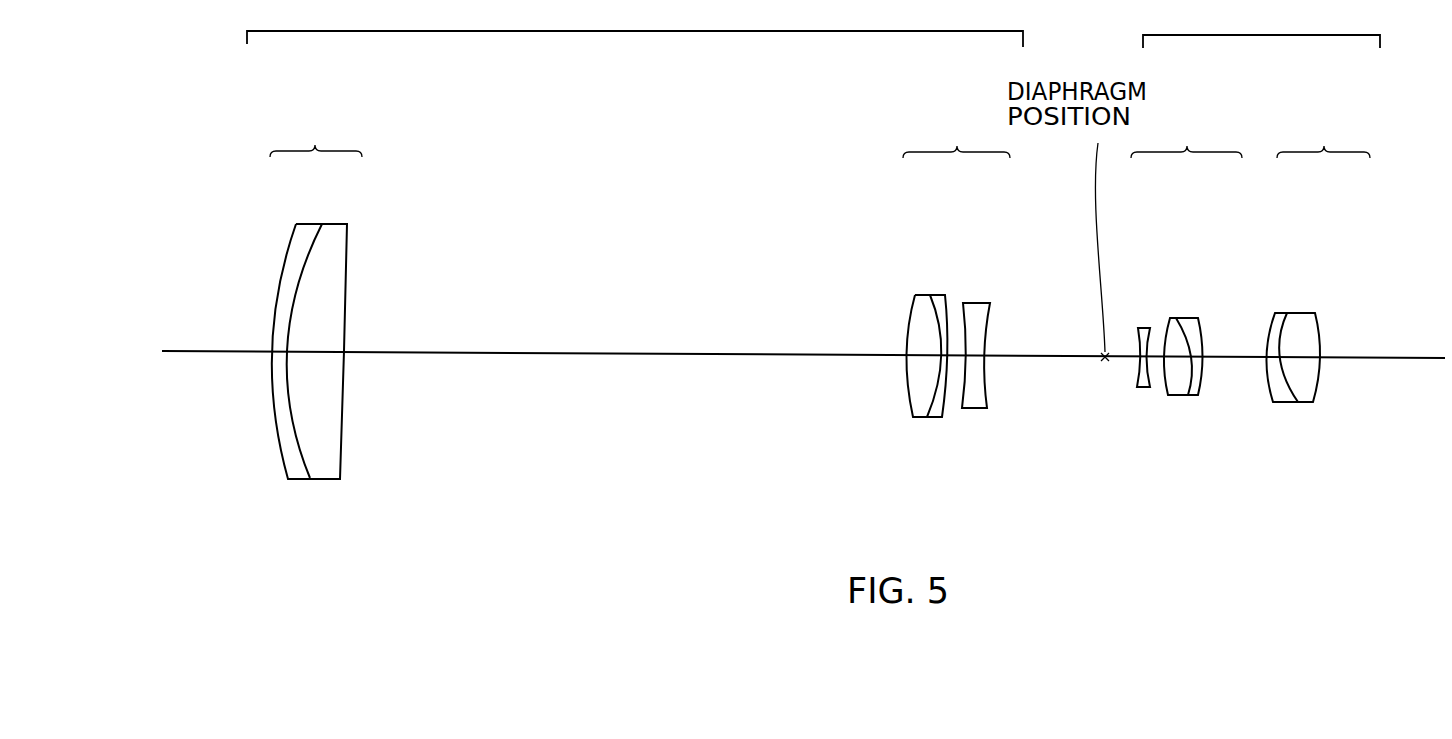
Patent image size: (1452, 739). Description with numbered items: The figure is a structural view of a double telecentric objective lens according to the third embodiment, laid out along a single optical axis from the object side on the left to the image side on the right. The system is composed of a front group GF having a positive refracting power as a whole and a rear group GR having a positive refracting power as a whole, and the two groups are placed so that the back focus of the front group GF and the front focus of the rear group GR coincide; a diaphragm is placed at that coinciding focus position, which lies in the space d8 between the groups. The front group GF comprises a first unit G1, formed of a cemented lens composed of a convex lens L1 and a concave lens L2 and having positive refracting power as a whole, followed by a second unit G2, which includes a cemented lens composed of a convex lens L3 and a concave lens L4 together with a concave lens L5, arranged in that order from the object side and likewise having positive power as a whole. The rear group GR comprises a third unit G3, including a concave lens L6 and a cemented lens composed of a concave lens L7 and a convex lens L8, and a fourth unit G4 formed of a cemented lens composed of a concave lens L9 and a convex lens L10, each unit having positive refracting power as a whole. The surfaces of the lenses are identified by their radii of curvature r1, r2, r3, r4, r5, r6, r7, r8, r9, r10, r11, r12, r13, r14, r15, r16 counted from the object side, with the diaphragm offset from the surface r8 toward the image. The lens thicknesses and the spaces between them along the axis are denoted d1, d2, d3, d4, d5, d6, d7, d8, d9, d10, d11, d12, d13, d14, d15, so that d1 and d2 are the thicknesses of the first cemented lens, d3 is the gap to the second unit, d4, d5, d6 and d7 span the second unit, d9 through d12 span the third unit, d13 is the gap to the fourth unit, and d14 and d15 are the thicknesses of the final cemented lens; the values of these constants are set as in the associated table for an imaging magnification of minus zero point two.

The front group GF is at (635, 24).
The rear group GR is at (1261, 26).
The first unit G1 is at (316, 134).
The second unit G2 is at (956, 137).
The third unit G3 is at (1186, 137).
The fourth unit G4 is at (1323, 137).
The convex lens L1 is at (308, 232).
The concave lens L2 is at (338, 232).
The convex lens L3 is at (924, 300).
The concave lens L4 is at (938, 300).
The concave lens L5 is at (975, 303).
The concave lens L6 is at (1146, 328).
The concave lens L7 is at (1175, 318).
The convex lens L8 is at (1193, 318).
The concave lens L9 is at (1285, 313).
The convex lens L10 is at (1308, 313).
The lens thickness d1 is at (278, 348).
The lens thickness d2 is at (317, 338).
The air space d3 is at (560, 338).
The lens thickness d4 is at (920, 353).
The lens thickness d5 is at (940, 353).
The air space d6 is at (958, 350).
The lens thickness d7 is at (972, 352).
The air space d8 is at (987, 350).
The lens thickness d9 is at (1138, 360).
The air space d10 is at (1160, 358).
The lens thickness d11 is at (1178, 357).
The lens thickness d12 is at (1190, 360).
The air space d13 is at (1280, 355).
The lens thickness d14 is at (1297, 357).
The lens thickness d15 is at (1320, 360).
The radius of curvature r1 is at (287, 467).
The radius of curvature r2 is at (309, 470).
The radius of curvature r3 is at (343, 467).
The radius of curvature r4 is at (912, 403).
The radius of curvature r5 is at (927, 413).
The radius of curvature r6 is at (945, 405).
The radius of curvature r7 is at (958, 403).
The radius of curvature r8 is at (992, 397).
The radius of curvature r9 is at (1138, 377).
The radius of curvature r10 is at (1152, 390).
The radius of curvature r11 is at (1167, 397).
The radius of curvature r12 is at (1188, 397).
The radius of curvature r13 is at (1203, 397).
The radius of curvature r14 is at (1273, 398).
The radius of curvature r15 is at (1297, 397).
The radius of curvature r16 is at (1313, 397).